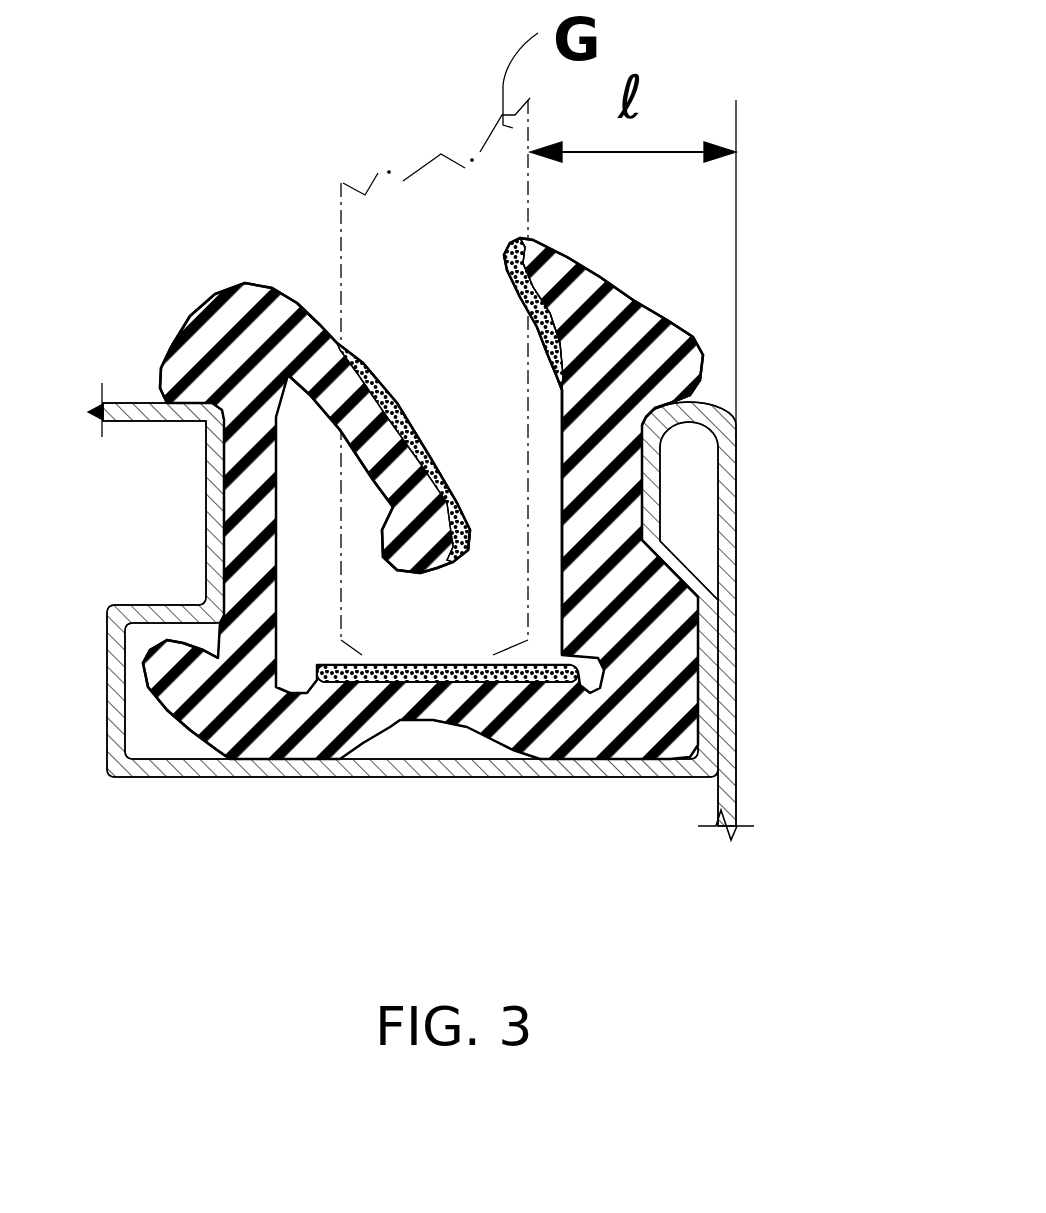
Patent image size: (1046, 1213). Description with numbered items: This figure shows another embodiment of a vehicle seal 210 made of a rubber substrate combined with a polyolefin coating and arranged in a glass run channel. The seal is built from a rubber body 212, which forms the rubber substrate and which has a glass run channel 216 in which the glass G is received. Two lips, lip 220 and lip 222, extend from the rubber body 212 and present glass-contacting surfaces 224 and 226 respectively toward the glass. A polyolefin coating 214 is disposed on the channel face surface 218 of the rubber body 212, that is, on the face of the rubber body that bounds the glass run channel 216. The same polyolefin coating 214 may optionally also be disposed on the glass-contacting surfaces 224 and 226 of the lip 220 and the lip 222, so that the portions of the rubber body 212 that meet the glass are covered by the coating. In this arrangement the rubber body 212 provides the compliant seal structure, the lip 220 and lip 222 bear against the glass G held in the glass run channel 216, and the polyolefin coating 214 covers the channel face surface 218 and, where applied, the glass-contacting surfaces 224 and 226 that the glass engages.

The vehicle seal 210 is at (160, 166).
The rubber body 212 is at (237, 548).
The polyolefin coating 214 is at (378, 378).
The glass run channel 216 is at (305, 645).
The channel face surface 218 is at (547, 658).
The lip 220 is at (300, 300).
The lip 222 is at (620, 300).
The glass-contacting surface 224 is at (445, 488).
The glass-contacting surface 226 is at (547, 313).